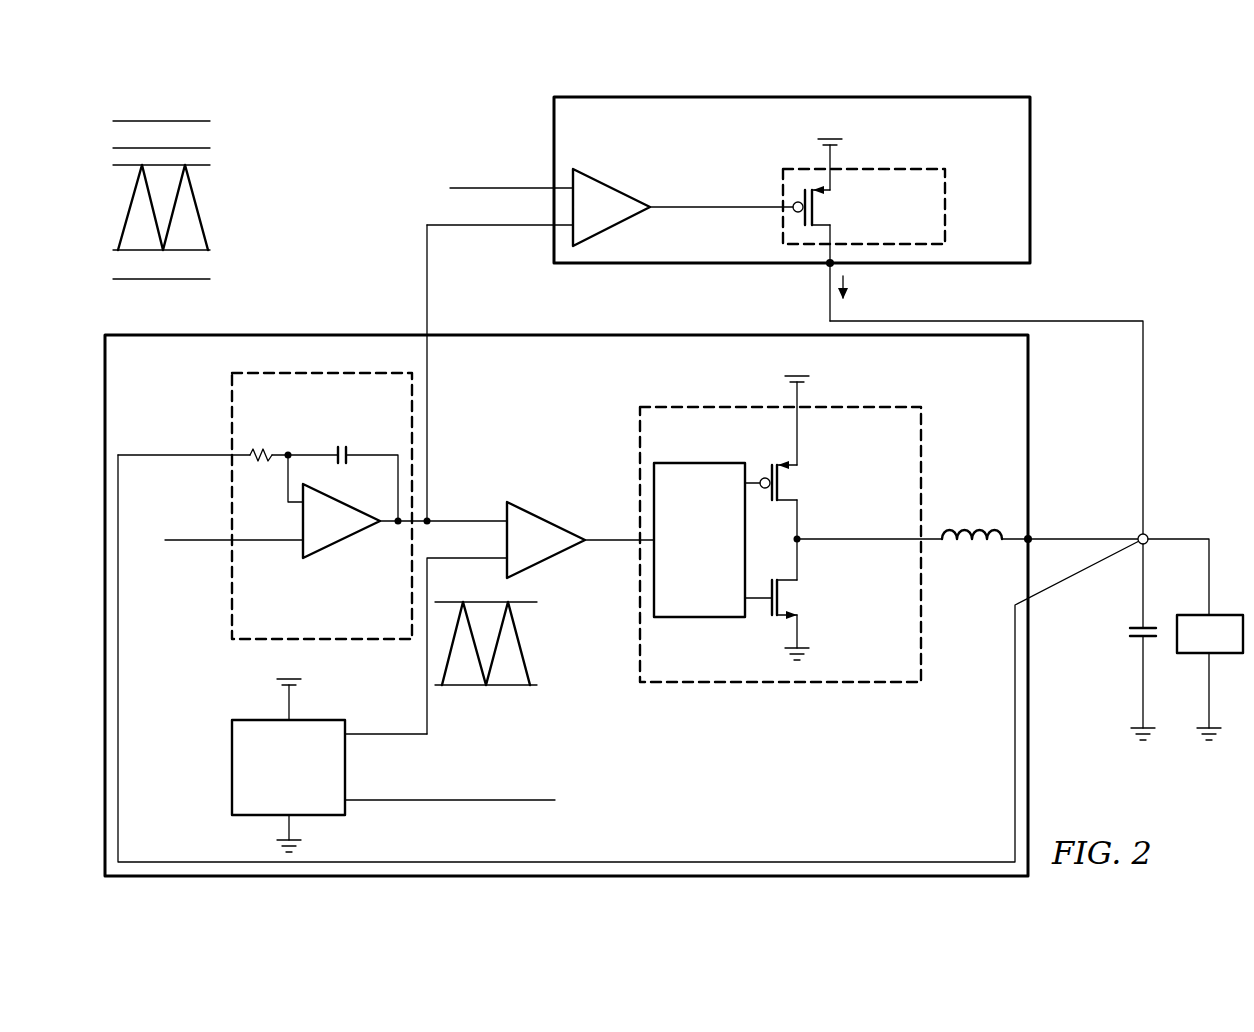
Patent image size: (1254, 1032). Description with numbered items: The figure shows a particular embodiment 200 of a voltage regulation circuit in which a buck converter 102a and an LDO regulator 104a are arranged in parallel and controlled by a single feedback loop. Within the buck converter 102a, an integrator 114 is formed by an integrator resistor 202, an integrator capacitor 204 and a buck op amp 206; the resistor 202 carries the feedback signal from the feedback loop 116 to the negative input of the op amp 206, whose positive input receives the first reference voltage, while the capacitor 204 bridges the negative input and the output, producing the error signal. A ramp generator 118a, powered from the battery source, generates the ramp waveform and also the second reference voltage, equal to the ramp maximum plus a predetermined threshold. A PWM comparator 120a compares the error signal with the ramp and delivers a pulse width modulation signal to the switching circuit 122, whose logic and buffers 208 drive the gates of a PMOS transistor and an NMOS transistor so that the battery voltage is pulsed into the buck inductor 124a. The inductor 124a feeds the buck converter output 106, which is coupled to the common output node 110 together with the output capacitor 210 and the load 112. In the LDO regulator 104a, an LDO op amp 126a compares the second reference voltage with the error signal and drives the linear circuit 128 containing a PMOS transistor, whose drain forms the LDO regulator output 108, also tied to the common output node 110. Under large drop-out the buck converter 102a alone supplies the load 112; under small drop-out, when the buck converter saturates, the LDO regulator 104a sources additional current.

The particular embodiment of the voltage regulation circuit 200 is at (674, 486).
The LDO regulator 104a is at (764, 209).
The LDO operational amplifier 126a is at (612, 186).
The linear circuit 128 is at (948, 205).
The LDO regulator output 108 is at (825, 268).
The buck converter 102a is at (1032, 438).
The integrator 114 is at (265, 506).
The integrator resistor 202 is at (262, 448).
The integrator capacitor 204 is at (342, 440).
The buck operational amplifier 206 is at (345, 545).
The PWM comparator 120a is at (547, 520).
The switching circuit 122 is at (791, 517).
The logic and buffers 208 is at (700, 462).
The buck inductor 124a is at (962, 525).
The buck converter output 106 is at (1018, 530).
The ramp generator 118a is at (232, 765).
The feedback loop 116 is at (732, 860).
The common output node 110 is at (1149, 545).
The output capacitor 210 is at (1130, 632).
The load 112 is at (1193, 655).